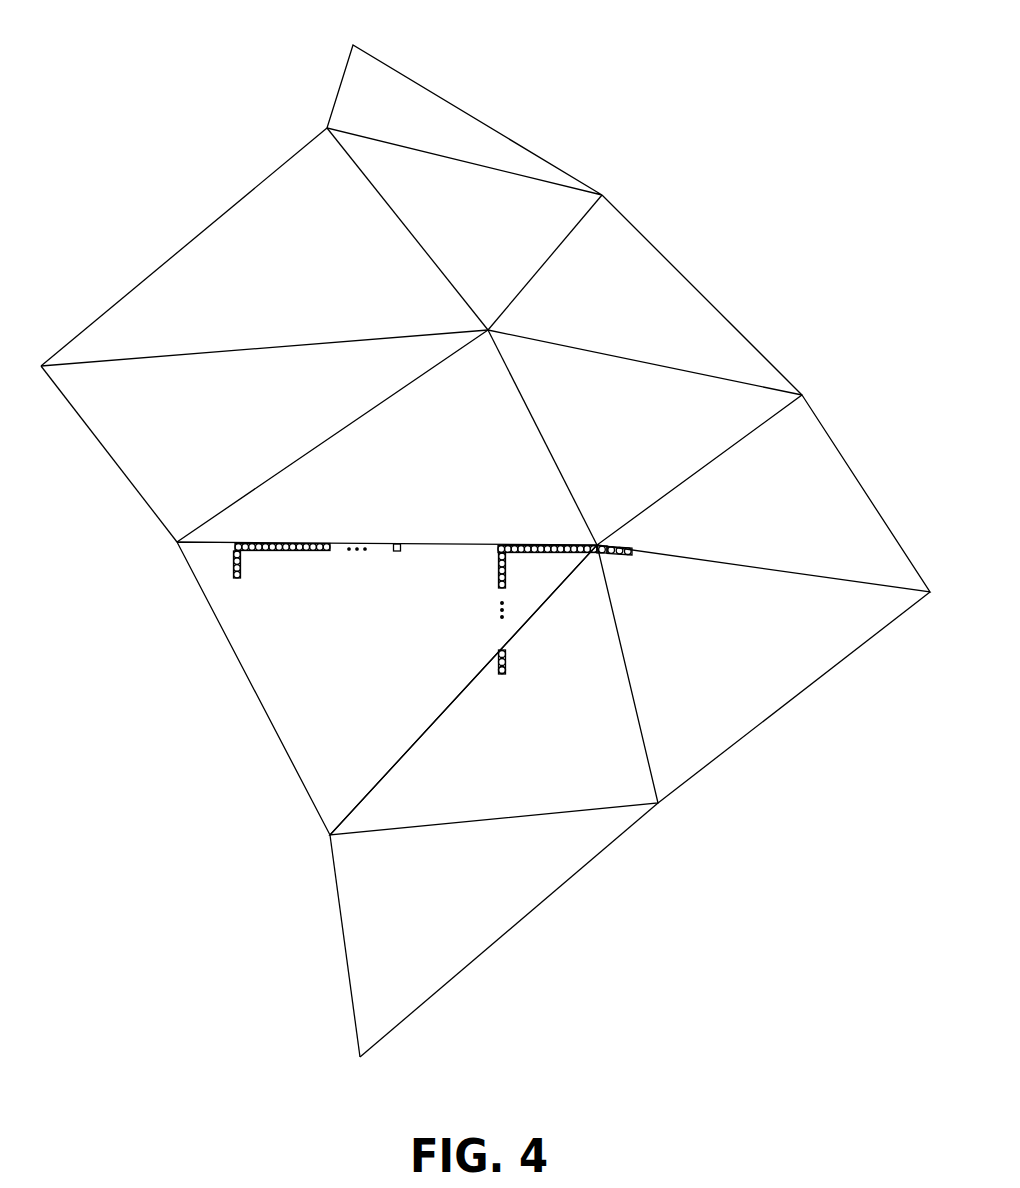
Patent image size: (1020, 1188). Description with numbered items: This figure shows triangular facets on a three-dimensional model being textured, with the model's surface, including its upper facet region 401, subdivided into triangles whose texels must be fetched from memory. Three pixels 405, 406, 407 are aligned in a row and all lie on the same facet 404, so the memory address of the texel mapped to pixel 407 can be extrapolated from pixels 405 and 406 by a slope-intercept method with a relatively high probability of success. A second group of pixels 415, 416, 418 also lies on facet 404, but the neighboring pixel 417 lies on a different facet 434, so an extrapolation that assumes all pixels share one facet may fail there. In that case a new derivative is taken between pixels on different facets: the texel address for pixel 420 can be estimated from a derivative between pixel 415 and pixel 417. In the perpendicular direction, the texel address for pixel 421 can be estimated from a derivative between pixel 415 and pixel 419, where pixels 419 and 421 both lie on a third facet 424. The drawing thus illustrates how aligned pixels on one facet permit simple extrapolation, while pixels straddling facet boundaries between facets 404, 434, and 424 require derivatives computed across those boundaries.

The panel 401 is at (417, 83).
The facet 404 is at (387, 688).
The pixel 405 is at (236, 546).
The pixel 406 is at (278, 552).
The pixel 407 is at (397, 552).
The pixel 415 is at (500, 548).
The pixel 416 is at (563, 543).
The pixel 417 is at (600, 553).
The pixel 418 is at (500, 583).
The pixel 419 is at (506, 655).
The pixel 420 is at (633, 553).
The pixel 421 is at (507, 673).
The facet 424 is at (494, 690).
The facet 434 is at (763, 505).